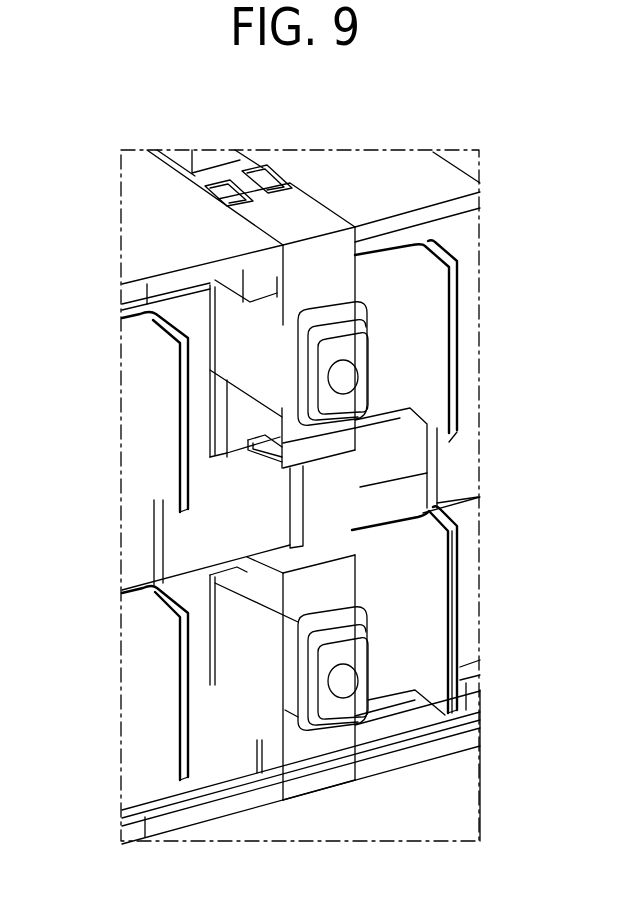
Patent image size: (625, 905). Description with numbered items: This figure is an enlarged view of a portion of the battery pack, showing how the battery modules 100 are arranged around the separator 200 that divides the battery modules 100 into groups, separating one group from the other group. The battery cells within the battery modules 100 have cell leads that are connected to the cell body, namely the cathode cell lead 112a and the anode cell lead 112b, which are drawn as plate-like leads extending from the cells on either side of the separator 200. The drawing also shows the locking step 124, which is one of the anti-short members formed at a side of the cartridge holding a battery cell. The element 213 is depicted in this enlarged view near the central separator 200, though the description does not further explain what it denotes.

The battery module 100 is at (152, 218).
The cathode cell lead 112a is at (185, 312).
The anode cell lead 112b is at (199, 722).
The separator 200 is at (305, 213).
The bracket 213 is at (280, 474).
The locking step 124 is at (310, 497).